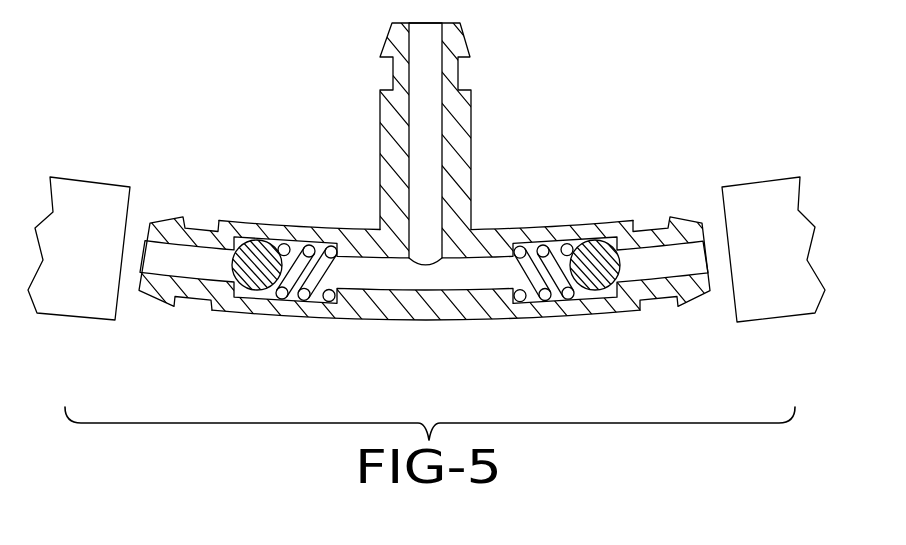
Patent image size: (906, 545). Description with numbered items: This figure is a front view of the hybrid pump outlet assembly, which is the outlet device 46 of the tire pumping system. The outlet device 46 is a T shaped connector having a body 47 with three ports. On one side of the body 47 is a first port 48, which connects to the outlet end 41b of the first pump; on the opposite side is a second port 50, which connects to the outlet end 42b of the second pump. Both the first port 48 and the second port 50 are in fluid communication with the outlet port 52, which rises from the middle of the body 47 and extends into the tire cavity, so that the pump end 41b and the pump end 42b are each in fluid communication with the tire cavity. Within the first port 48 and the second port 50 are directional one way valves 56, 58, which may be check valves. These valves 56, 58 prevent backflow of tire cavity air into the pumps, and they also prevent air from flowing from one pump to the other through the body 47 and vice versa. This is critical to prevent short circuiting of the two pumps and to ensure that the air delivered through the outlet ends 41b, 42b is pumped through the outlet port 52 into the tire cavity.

The pump outlet end 41b is at (92, 207).
The pump outlet end 42b is at (758, 207).
The outlet device 46 is at (453, 272).
The body 47 is at (493, 320).
The first port 48 is at (148, 296).
The second port 50 is at (680, 303).
The outlet port 52 is at (466, 40).
The directional one way valve 56 is at (277, 302).
The directional one way valve 58 is at (593, 270).